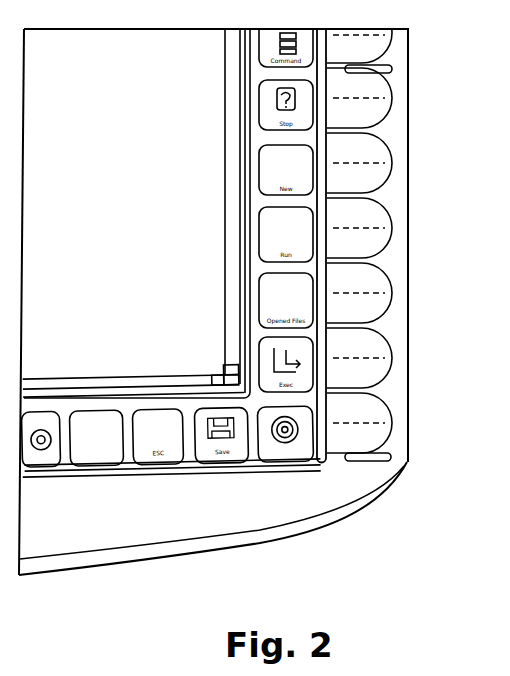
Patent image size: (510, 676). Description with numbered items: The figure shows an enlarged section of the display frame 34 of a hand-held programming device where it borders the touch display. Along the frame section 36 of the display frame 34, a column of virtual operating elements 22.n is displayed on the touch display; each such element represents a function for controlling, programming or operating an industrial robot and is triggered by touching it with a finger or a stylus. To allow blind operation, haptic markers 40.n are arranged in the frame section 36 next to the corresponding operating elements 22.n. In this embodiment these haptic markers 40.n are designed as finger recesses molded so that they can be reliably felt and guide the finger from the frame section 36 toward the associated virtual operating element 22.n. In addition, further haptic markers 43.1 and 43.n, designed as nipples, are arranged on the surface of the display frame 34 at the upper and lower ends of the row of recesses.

The display frame 34 is at (367, 492).
The frame section 36 is at (318, 270).
The virtual operating element 22.n is at (308, 410).
The haptic marker 40.n is at (365, 437).
The haptic marker 43.1 is at (392, 68).
The haptic marker 43.n is at (392, 457).